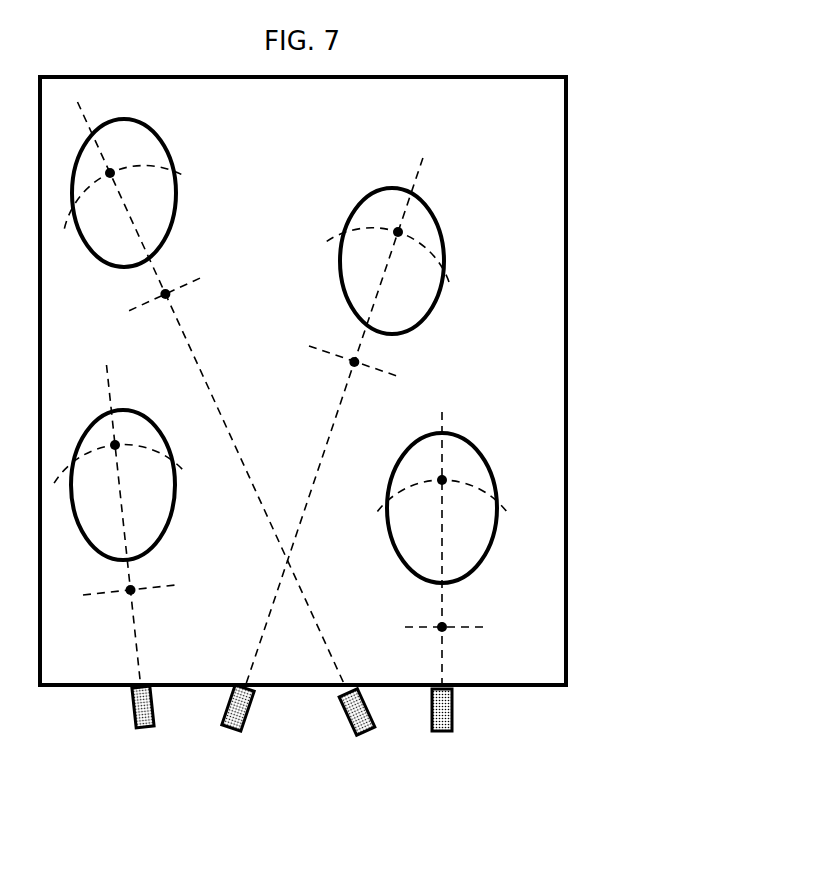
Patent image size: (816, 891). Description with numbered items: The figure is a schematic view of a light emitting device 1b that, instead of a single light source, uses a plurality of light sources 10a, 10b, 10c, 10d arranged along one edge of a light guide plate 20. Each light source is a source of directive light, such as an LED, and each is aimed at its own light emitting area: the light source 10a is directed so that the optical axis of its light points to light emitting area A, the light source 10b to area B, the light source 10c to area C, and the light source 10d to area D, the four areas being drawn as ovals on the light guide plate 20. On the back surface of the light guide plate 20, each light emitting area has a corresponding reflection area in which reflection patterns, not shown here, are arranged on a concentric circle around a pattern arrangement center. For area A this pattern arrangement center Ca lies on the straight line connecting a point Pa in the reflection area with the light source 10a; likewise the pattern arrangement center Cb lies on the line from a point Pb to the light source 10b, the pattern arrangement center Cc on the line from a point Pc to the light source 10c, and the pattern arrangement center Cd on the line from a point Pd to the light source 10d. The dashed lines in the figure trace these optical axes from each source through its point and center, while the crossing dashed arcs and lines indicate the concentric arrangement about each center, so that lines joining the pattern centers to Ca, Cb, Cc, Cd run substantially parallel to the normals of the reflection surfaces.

The light emitting device 1b is at (593, 162).
The light guide plate 20 is at (560, 358).
The light source 10a is at (364, 734).
The light source 10b is at (232, 730).
The light source 10c is at (145, 728).
The light source 10d is at (442, 732).
The point Pa is at (110, 173).
The point Pb is at (398, 232).
The point Pc is at (115, 445).
The point Pd is at (442, 480).
The pattern arrangement center Ca is at (165, 294).
The pattern arrangement center Cb is at (355, 362).
The pattern arrangement center Cc is at (130, 590).
The pattern arrangement center Cd is at (442, 627).